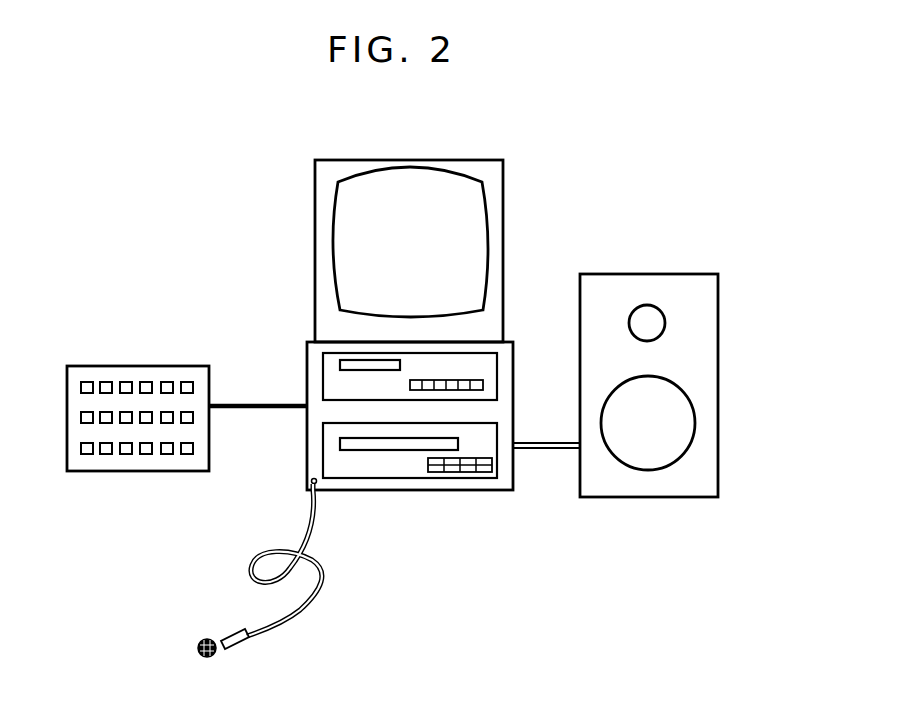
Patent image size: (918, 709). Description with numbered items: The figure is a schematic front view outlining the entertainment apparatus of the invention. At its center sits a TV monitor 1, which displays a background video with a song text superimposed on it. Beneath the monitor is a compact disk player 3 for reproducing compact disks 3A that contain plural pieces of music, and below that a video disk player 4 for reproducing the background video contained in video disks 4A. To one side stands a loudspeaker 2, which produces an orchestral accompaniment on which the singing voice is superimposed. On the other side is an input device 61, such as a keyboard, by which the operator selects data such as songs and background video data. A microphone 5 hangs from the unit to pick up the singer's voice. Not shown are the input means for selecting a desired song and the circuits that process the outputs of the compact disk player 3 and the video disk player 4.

The TV monitor 1 is at (503, 162).
The loudspeaker 2 is at (718, 368).
The compact disk player 3 is at (323, 390).
The compact disk 3A is at (338, 366).
The video disk player 4 is at (323, 442).
The video disk 4A is at (340, 443).
The microphone 5 is at (207, 637).
The input device 61 is at (133, 365).